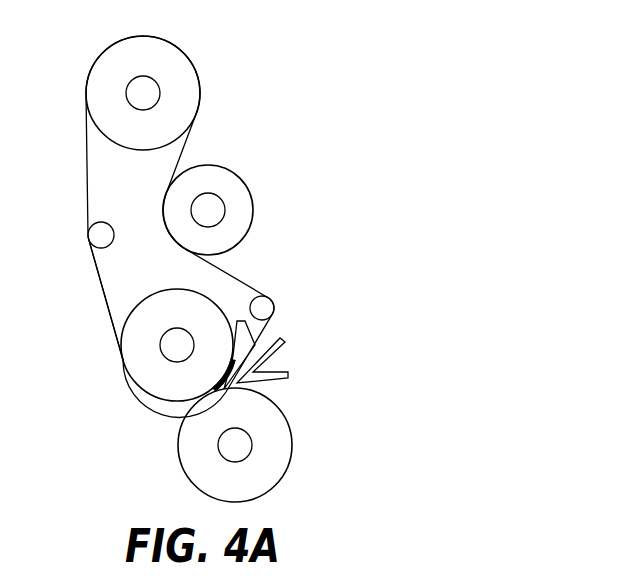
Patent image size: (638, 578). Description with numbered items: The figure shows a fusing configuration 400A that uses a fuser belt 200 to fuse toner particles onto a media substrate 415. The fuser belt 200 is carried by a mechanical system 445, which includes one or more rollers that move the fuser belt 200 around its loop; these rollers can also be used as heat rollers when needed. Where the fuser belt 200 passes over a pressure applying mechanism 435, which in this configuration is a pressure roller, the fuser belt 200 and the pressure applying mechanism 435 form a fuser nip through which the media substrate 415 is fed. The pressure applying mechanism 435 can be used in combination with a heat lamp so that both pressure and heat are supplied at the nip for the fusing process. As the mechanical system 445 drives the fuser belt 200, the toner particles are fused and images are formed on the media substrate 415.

The fusing configuration 400A is at (257, 50).
The mechanical system 445 is at (205, 133).
The fuser belt 200 is at (103, 303).
The media substrate 415 is at (190, 403).
The pressure applying mechanism 435 is at (293, 443).